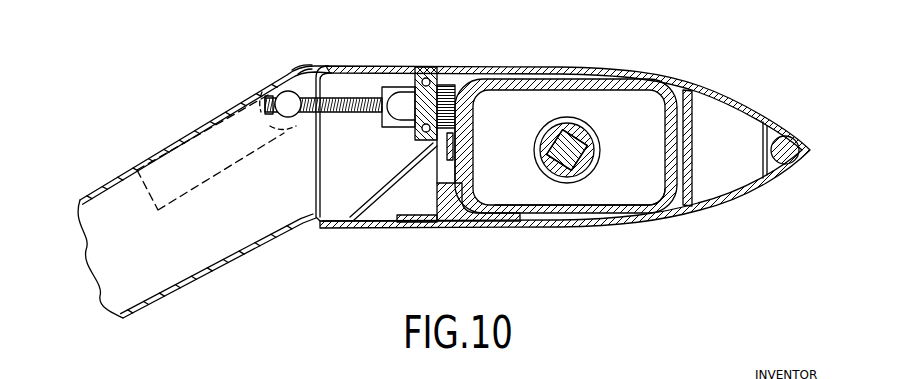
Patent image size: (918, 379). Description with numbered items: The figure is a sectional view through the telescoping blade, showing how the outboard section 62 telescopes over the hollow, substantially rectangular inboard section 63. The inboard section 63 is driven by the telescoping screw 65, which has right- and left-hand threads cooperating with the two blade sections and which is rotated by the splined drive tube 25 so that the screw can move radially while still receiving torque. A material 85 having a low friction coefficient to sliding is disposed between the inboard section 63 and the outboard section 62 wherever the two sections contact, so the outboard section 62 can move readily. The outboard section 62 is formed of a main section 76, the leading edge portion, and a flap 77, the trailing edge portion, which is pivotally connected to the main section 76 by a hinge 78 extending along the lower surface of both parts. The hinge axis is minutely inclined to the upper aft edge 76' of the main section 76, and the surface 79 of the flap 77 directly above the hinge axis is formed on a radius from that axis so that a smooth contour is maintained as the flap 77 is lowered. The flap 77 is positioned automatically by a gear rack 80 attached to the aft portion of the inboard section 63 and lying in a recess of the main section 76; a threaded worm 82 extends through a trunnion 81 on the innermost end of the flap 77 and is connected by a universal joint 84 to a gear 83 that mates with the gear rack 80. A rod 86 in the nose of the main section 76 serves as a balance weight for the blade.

The drive tube 25 is at (583, 147).
The outboard section 62 is at (627, 69).
The inboard section 63 is at (511, 213).
The telescoping screw 65 is at (540, 148).
The main section 76 is at (421, 232).
The upper aft edge 76' is at (315, 39).
The flap 77 is at (213, 280).
The hinge 78 is at (320, 229).
The surface 79 is at (291, 68).
The gear rack 80 is at (450, 142).
The trunnion 81 is at (284, 99).
The threaded worm 82 is at (344, 114).
The gear 83 is at (433, 71).
The universal joint 84 is at (386, 127).
The material 85 is at (480, 79).
The rod 86 is at (789, 141).